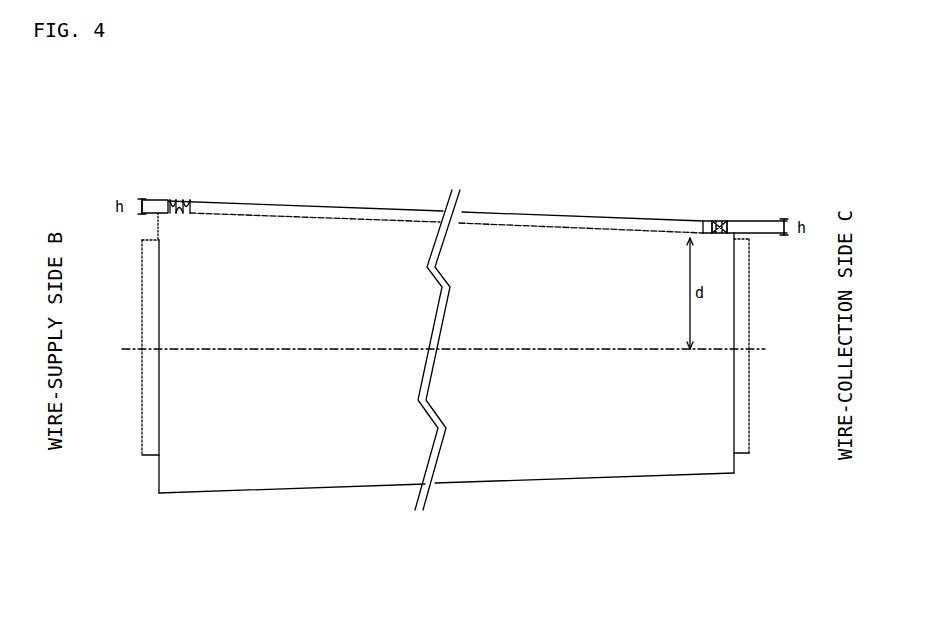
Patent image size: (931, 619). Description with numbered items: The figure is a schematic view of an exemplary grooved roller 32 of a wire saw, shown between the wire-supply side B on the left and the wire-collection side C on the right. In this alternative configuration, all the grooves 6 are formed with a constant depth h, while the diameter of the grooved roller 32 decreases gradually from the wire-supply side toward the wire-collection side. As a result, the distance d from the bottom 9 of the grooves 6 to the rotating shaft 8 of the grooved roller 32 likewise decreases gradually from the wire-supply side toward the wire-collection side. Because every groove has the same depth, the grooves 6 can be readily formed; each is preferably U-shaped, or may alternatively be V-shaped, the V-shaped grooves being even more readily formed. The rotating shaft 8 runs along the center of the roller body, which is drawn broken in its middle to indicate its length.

The grooved roller 32 is at (249, 165).
The grooves 6 is at (170, 200).
The bottom 9 is at (712, 222).
The rotating shaft 8 is at (290, 349).